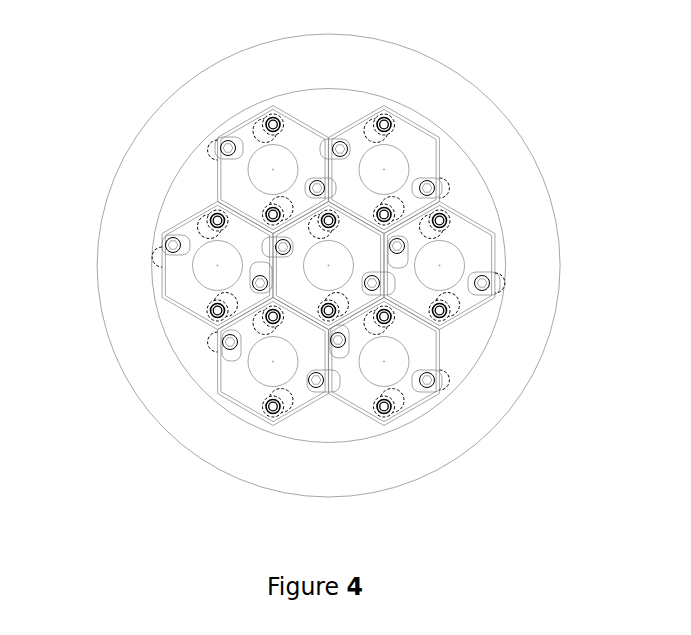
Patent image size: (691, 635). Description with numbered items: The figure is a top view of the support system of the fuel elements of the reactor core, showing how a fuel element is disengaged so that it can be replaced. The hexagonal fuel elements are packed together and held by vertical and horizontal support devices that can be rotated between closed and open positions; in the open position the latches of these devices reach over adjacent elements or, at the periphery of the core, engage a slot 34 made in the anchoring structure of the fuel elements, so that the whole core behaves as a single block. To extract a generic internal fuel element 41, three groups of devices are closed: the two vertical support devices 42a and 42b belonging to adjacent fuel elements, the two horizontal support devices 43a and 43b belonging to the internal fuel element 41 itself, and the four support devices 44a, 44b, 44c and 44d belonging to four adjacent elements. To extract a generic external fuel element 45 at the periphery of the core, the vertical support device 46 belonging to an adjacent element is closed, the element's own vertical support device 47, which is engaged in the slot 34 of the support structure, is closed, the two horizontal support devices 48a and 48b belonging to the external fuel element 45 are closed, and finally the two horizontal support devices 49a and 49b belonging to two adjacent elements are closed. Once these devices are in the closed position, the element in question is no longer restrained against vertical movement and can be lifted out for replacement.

The generic internal fuel element 41 is at (348, 235).
The slot 34 is at (208, 340).
The vertical support device 42a is at (401, 257).
The vertical support device 42b is at (257, 271).
The horizontal support device 43a is at (320, 205).
The horizontal support device 43b is at (395, 283).
The support device 44a is at (389, 317).
The support device 44b is at (386, 210).
The support device 44c is at (266, 216).
The support device 44d is at (258, 282).
The generic external fuel element 45 is at (225, 374).
The vertical support device 46 is at (343, 343).
The vertical support device 47 is at (228, 343).
The horizontal support device 48a is at (224, 371).
The horizontal support device 48b is at (272, 409).
The horizontal support device 49a is at (214, 313).
The horizontal support device 49b is at (333, 318).